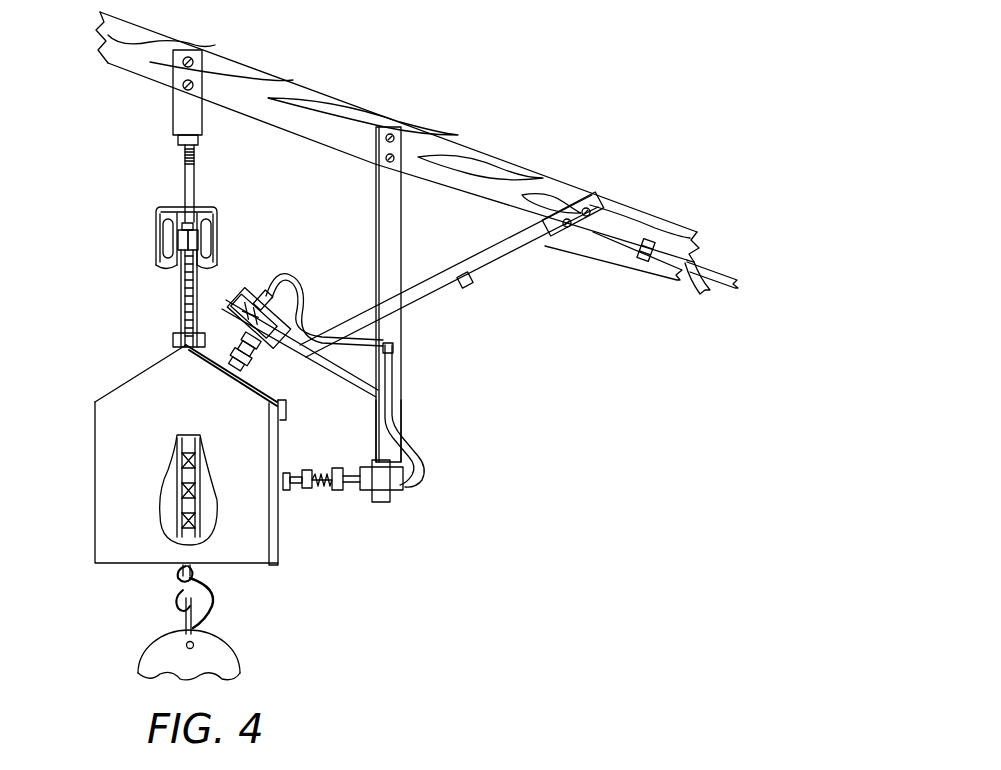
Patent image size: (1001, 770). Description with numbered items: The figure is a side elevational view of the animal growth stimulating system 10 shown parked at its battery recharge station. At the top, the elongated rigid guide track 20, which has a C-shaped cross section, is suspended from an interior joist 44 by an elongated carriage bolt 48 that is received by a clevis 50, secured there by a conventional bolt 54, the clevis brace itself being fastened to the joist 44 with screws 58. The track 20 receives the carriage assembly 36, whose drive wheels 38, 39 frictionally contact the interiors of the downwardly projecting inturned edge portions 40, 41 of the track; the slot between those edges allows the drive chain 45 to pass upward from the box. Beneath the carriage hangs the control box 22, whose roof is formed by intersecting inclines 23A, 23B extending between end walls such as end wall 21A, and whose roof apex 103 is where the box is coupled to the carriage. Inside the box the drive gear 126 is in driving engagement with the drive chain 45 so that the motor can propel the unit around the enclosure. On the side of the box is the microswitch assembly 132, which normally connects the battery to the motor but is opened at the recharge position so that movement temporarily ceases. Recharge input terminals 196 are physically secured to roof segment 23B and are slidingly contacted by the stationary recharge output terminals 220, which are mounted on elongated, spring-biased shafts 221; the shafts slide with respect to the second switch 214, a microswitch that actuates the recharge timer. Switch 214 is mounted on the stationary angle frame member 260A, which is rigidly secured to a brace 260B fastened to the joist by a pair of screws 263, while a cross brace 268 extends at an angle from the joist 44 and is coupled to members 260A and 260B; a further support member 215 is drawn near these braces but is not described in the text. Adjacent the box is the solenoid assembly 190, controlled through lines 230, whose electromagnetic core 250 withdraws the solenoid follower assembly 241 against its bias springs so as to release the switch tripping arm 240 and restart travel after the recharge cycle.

The system 10 is at (511, 350).
The guide track 20 is at (188, 248).
The end wall 21A is at (162, 445).
The control box 22 is at (153, 455).
The incline 23A is at (128, 378).
The incline 23B is at (215, 368).
The carriage assembly 36 is at (156, 229).
The drive wheel 38 is at (170, 250).
The drive wheel 39 is at (208, 240).
The inturned edge portion 40 is at (176, 258).
The inturned edge portion 41 is at (196, 258).
The interior joist 44 is at (335, 98).
The drive chain 45 is at (181, 318).
The carriage bolt 48 is at (194, 158).
The clevis 50 is at (173, 112).
The bolt 54 is at (198, 140).
The screw 58 is at (193, 85).
The roof apex 103 is at (182, 350).
The drive gear 126 is at (200, 490).
The microswitch assembly 132 is at (292, 494).
The solenoid assembly 190 is at (381, 488).
The recharge input terminals 196 is at (345, 362).
The second switch 214 is at (268, 278).
The support arm 215 is at (592, 236).
The recharge output terminals 220 is at (250, 366).
The elongated shafts 221 is at (238, 308).
The lines 230 is at (428, 452).
The switch tripping arm 240 is at (300, 476).
The solenoid follower assembly 241 is at (334, 492).
The electromagnetic core 250 is at (405, 488).
The stationary angle frame member 260A is at (378, 396).
The brace 260B is at (401, 222).
The screws 263 is at (396, 158).
The cross brace 268 is at (470, 284).